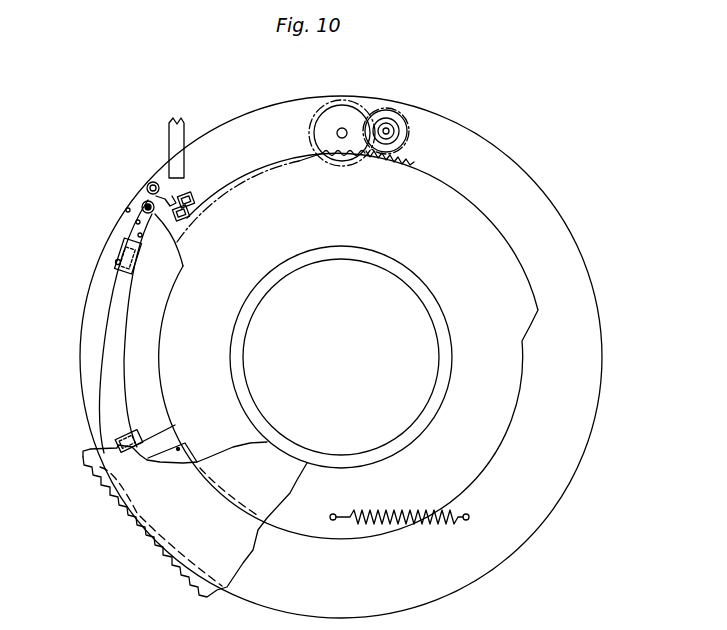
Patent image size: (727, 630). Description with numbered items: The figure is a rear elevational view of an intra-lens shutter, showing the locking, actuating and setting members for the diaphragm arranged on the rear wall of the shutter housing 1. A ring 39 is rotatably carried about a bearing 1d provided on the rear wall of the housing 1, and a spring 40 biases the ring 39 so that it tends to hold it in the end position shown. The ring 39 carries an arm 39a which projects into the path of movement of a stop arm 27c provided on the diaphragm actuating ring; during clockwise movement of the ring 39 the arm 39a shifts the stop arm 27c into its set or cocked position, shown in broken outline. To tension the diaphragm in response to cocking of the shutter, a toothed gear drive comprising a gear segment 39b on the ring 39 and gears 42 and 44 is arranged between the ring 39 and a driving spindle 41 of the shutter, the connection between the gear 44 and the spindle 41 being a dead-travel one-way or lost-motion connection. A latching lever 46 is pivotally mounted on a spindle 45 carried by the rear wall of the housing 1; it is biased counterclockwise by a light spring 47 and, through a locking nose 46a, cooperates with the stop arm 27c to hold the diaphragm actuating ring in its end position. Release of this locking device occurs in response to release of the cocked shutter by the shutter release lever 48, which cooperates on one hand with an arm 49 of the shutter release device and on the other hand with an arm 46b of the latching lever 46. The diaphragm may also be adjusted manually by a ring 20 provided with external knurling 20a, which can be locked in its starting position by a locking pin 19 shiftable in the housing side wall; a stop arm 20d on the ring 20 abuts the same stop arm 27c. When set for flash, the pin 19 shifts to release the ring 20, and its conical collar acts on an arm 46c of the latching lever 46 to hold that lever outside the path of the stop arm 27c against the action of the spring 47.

The housing 1 is at (576, 320).
The bearing 1d is at (430, 410).
The ring 39 is at (453, 243).
The arm 39a is at (162, 433).
The gear segment 39b is at (277, 163).
The spring 40 is at (437, 523).
The driving spindle 41 is at (345, 128).
The gear 42 is at (405, 123).
The gear 44 is at (330, 118).
The spindle 45 is at (160, 215).
The latching lever 46 is at (132, 232).
The locking nose 46a is at (112, 266).
The arm 46b is at (189, 212).
The arm 46c is at (172, 198).
The spring 47 is at (142, 205).
The shutter release lever 48 is at (187, 127).
The arm 49 is at (195, 203).
The locking pin 19 is at (153, 181).
The ring 20 is at (157, 520).
The external knurling 20a is at (107, 507).
The stop arm 20d is at (100, 467).
The stop arm 27c is at (110, 255).